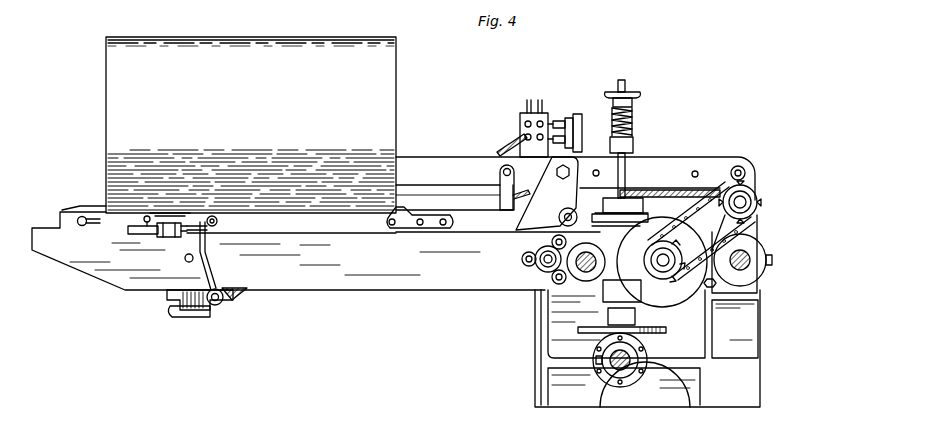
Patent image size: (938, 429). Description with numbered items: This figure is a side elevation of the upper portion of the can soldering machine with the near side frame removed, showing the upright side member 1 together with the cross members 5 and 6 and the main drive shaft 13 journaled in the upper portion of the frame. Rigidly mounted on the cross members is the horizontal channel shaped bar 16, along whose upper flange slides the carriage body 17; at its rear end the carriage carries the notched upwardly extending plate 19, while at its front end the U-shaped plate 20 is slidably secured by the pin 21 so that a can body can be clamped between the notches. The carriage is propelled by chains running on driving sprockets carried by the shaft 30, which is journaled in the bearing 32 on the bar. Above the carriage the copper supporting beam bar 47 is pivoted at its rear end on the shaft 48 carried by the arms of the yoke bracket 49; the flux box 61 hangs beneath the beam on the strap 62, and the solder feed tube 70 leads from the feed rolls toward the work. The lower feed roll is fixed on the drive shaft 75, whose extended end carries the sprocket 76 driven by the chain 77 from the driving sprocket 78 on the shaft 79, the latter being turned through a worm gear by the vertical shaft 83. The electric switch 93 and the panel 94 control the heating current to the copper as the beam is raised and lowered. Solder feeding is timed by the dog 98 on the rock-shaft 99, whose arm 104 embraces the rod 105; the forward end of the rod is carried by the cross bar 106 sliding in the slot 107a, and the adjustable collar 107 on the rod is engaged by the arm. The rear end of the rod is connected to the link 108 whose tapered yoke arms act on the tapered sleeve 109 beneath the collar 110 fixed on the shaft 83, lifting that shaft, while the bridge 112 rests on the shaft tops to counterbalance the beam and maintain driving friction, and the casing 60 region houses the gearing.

The upright side member 1 is at (535, 386).
The cross member 5 is at (752, 257).
The cross member 6 is at (582, 278).
The main drive shaft 13 is at (603, 366).
The channel shaped bar 16 is at (352, 282).
The channel shaped body 17 is at (296, 213).
The upwardly extending plate 19 is at (405, 229).
The U-shaped plate 20 is at (63, 210).
The pin 21 is at (82, 227).
The shaft 30 is at (544, 264).
The bearing 32 is at (535, 262).
The beam bar 47 is at (411, 164).
The shaft 48 is at (746, 170).
The yoke bracket 49 is at (754, 228).
The disk 60 is at (664, 222).
The flux box 61 is at (437, 195).
The strap 62 is at (499, 172).
The solder feed tube 70 is at (530, 160).
The drive shaft 75 is at (750, 196).
The sprocket 76 is at (712, 232).
The chain 77 is at (735, 329).
The driving sprocket 78 is at (680, 282).
The shaft 79 is at (660, 276).
The vertical shaft 83 is at (604, 166).
The electric switch 93 is at (574, 114).
The panel 94 is at (530, 112).
The dog 98 is at (244, 292).
The rock-shaft 99 is at (218, 306).
The arm 104 is at (214, 268).
The rod 105 is at (325, 237).
The cross bar 106 is at (170, 213).
The adjustable collar 107 is at (218, 223).
The slot 107a is at (130, 236).
The link 108 is at (655, 197).
The tapered sleeve 109 is at (648, 210).
The collar 110 is at (636, 198).
The bridge 112 is at (609, 140).